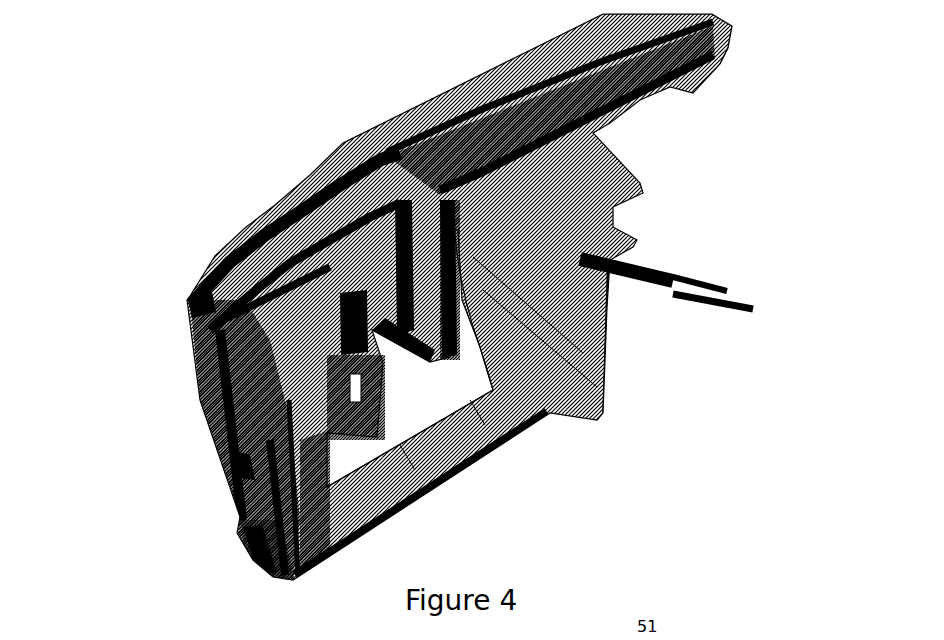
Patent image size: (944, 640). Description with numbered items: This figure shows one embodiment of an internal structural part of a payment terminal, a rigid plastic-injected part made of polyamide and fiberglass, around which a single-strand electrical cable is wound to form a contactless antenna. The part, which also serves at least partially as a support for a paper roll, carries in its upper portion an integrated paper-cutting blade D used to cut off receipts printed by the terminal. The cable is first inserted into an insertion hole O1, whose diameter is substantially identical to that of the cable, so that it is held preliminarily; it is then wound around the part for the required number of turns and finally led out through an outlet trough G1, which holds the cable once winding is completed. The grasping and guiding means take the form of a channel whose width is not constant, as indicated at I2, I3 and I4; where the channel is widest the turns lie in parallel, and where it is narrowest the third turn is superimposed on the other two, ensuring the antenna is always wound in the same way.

The paper-cutting blade D is at (430, 87).
The outlet trough G1 is at (397, 161).
The insertion hole O1 is at (395, 205).
The channel width I2 is at (207, 304).
The channel width I3 is at (247, 463).
The channel width I4 is at (270, 553).